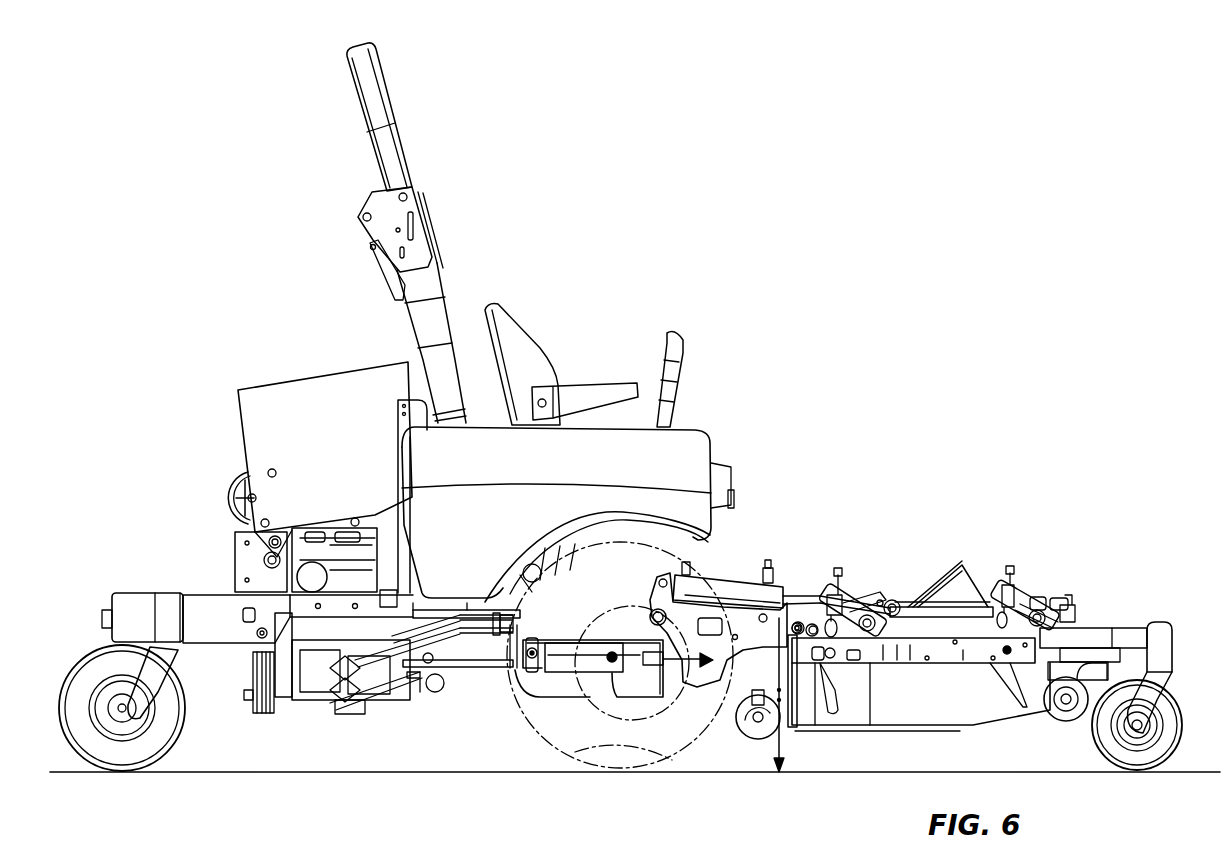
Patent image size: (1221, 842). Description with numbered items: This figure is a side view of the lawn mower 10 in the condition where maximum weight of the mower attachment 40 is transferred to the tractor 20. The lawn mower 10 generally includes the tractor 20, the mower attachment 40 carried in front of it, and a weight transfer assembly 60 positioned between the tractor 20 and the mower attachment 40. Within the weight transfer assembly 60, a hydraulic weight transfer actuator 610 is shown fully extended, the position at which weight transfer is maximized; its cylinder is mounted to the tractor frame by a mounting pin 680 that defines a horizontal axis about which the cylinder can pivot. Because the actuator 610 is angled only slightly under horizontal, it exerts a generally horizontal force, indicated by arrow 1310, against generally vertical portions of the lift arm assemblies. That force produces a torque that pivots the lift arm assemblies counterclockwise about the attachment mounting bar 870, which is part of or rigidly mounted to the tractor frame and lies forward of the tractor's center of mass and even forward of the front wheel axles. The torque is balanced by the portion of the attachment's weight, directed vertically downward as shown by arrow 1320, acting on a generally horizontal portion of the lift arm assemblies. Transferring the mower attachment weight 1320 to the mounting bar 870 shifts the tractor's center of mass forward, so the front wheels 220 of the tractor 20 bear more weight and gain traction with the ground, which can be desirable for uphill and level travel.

The lawn mower 10 is at (813, 138).
The tractor 20 is at (218, 412).
The mower attachment 40 is at (1142, 555).
The weight transfer assembly 60 is at (819, 529).
The front wheels 220 is at (697, 768).
The weight transfer actuator 610 is at (598, 667).
The mounting pin 680 is at (528, 677).
The attachment mounting bar 870 is at (650, 617).
The arrow indicating horizontal force 1310 is at (580, 670).
The arrow indicating mower attachment weight 1320 is at (788, 740).